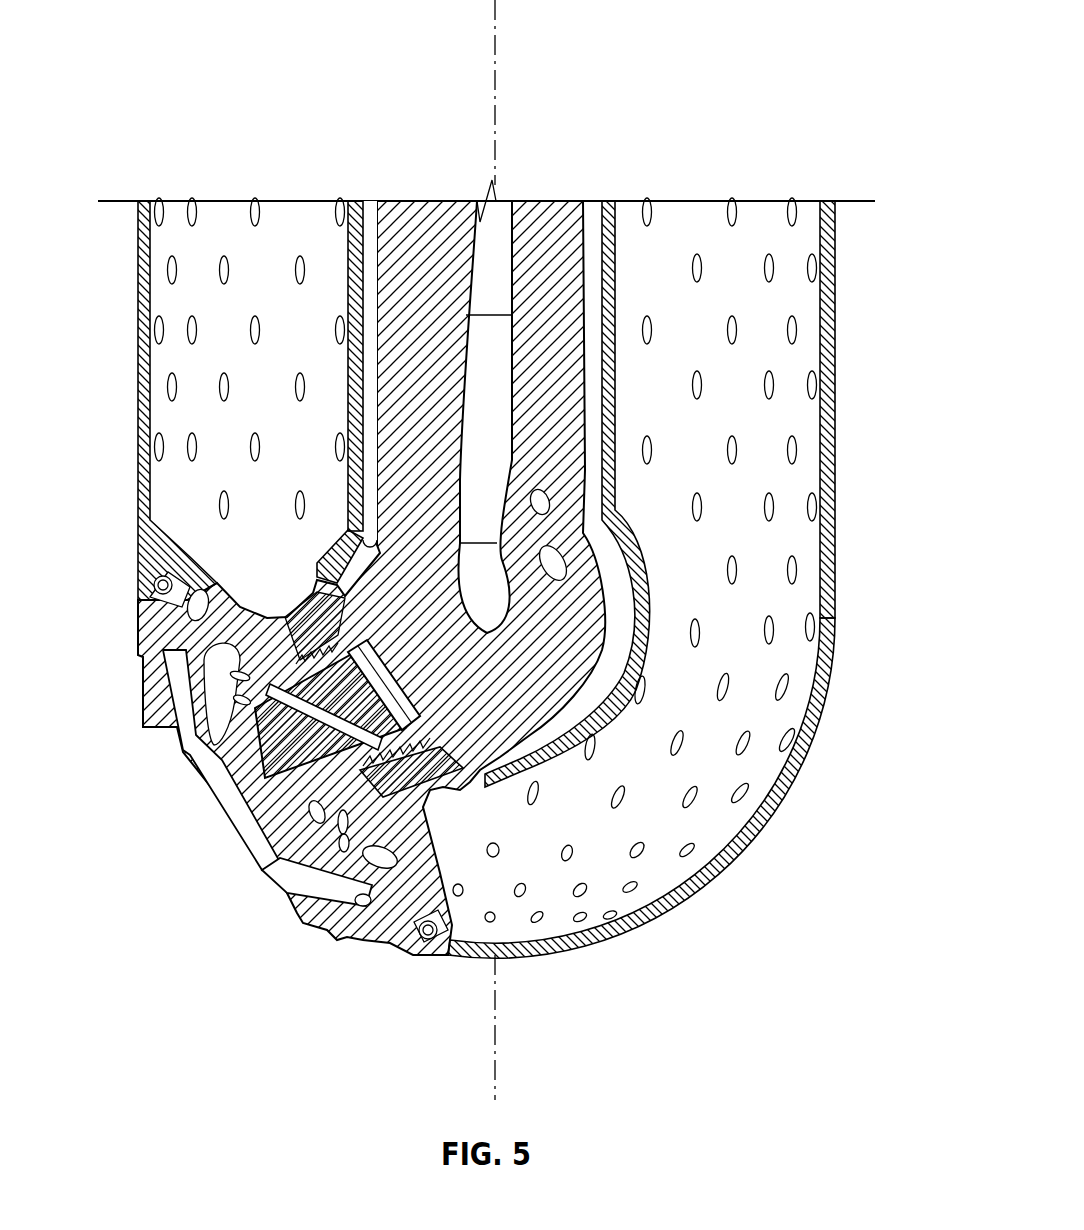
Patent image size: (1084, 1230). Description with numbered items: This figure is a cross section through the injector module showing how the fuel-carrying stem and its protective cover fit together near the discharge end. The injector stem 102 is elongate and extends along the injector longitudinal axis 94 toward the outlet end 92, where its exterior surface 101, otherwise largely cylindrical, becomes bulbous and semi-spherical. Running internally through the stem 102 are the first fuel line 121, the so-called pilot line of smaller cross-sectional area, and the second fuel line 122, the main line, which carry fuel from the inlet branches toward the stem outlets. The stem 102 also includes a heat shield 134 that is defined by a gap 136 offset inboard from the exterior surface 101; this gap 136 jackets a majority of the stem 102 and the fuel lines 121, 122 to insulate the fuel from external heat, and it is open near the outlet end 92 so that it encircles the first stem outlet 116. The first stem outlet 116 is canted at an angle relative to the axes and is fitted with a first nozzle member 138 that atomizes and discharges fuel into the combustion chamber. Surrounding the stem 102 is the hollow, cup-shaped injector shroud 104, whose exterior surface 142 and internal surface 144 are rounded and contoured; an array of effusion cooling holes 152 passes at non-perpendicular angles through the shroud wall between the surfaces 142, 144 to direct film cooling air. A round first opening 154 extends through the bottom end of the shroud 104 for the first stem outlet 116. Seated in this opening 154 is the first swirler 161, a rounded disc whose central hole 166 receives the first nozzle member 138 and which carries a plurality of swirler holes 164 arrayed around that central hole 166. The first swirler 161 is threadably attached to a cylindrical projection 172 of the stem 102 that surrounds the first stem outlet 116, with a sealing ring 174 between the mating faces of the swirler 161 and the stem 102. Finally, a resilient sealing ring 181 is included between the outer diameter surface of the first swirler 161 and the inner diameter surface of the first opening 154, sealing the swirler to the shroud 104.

The outlet end 92 is at (657, 910).
The injector longitudinal axis 94 is at (495, 60).
The exterior surface 101 is at (617, 258).
The injector stem 102 is at (546, 250).
The injector shroud 104 is at (833, 354).
The first stem outlet 116 is at (335, 645).
The first fuel line 121 is at (414, 678).
The second fuel line 122 is at (482, 437).
The heat shield 134 is at (636, 548).
The gap 136 is at (617, 640).
The first nozzle member 138 is at (330, 780).
The exterior surface 142 is at (137, 325).
The internal surface 144 is at (150, 247).
The effusion cooling holes 152 is at (785, 690).
The first opening 154 is at (142, 592).
The first swirler 161 is at (303, 922).
The swirler holes 164 is at (318, 780).
The central hole 166 is at (330, 797).
The cylindrical projection 172 is at (280, 615).
The sealing ring 174 is at (313, 593).
The resilient sealing ring 181 is at (160, 578).